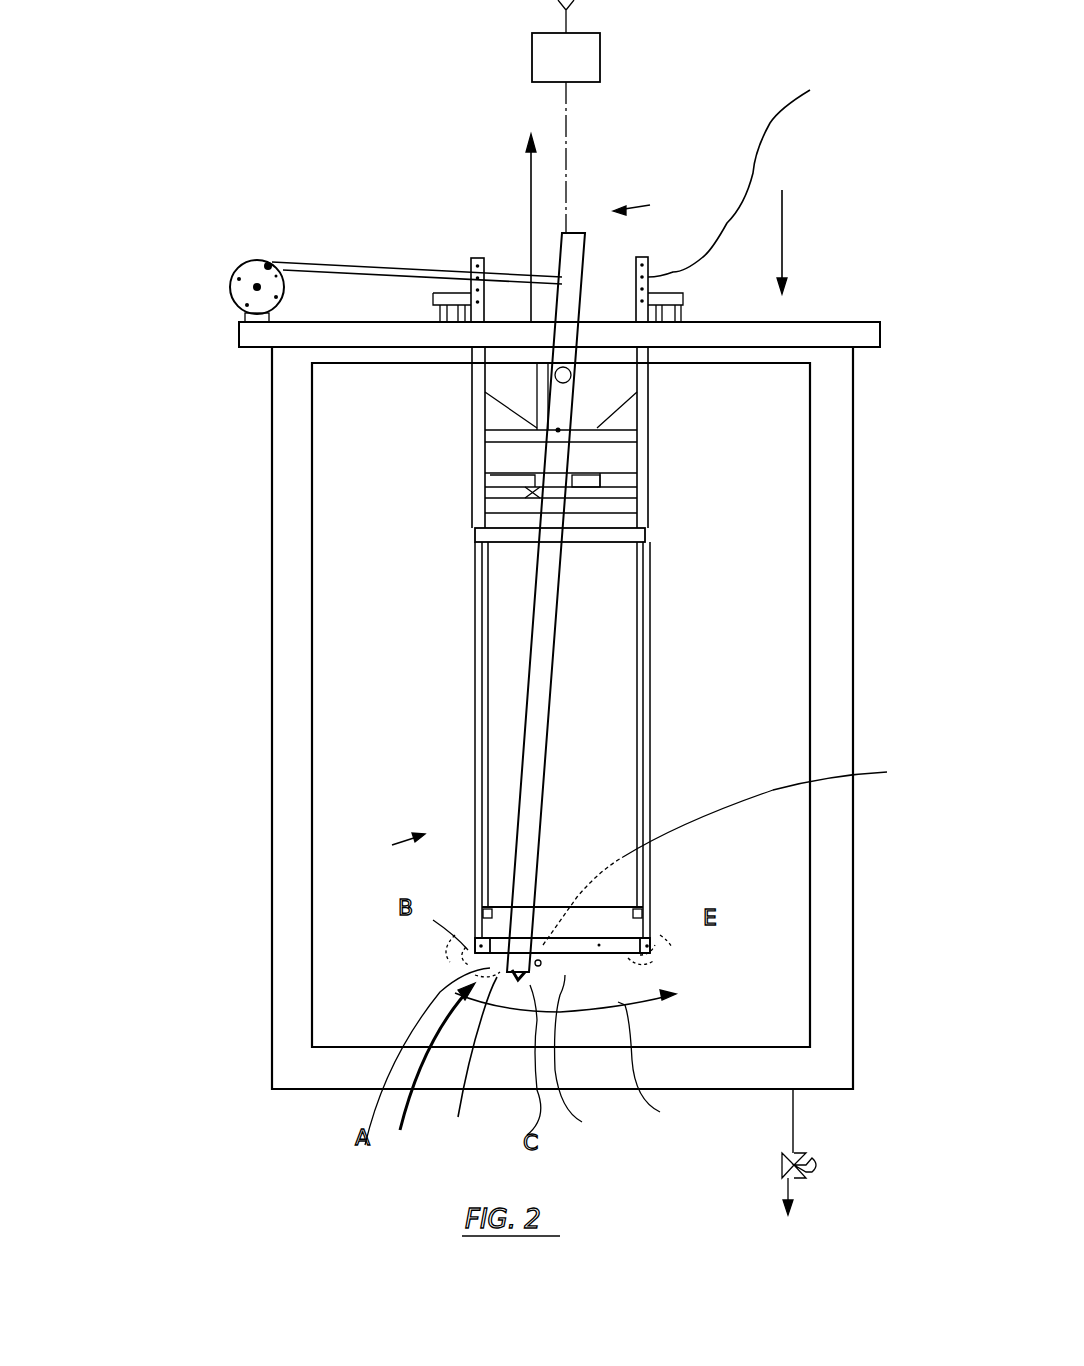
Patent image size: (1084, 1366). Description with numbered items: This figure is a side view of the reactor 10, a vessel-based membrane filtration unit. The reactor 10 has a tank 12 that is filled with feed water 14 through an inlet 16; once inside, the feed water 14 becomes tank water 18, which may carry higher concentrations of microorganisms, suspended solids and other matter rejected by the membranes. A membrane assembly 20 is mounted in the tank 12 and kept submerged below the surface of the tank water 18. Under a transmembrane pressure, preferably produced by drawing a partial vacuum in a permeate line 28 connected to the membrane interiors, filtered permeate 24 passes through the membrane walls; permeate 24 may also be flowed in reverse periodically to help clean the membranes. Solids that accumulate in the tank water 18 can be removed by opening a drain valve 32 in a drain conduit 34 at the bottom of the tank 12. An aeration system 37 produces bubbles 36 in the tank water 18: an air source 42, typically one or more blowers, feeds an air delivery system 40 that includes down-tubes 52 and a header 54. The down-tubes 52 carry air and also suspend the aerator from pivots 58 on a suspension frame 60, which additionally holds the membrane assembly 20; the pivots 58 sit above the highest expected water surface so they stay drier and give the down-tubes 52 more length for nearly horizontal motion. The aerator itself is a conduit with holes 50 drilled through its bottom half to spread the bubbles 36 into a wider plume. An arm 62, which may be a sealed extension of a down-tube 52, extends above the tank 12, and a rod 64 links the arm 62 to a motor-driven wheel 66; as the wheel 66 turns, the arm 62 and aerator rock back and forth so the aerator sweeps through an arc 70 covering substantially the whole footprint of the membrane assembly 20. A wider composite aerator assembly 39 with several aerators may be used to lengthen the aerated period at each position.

The reactor 10 is at (160, 888).
The tank 12 is at (855, 921).
The feed water 14 is at (777, 226).
The inlet 16 is at (783, 232).
The tank water 18 is at (762, 761).
The membrane assembly 20 is at (612, 794).
The permeate 24 is at (533, 209).
The permeate line 28 is at (531, 188).
The drain valve 32 is at (818, 1160).
The drain conduit 34 is at (795, 1200).
The bubbles 36 is at (685, 958).
The aeration system 37 is at (522, 523).
The aerator assembly 39 is at (532, 1078).
The air delivery system 40 is at (571, 168).
The air source 42 is at (600, 56).
The holes 50 is at (592, 1058).
The down-tubes 52 is at (555, 648).
The header 54 is at (572, 375).
The pivots 58 is at (590, 446).
The suspension frame 60 is at (756, 169).
The arm 62 is at (588, 247).
The rod 64 is at (330, 260).
The wheel 66 is at (232, 305).
The arc 70 is at (662, 1063).